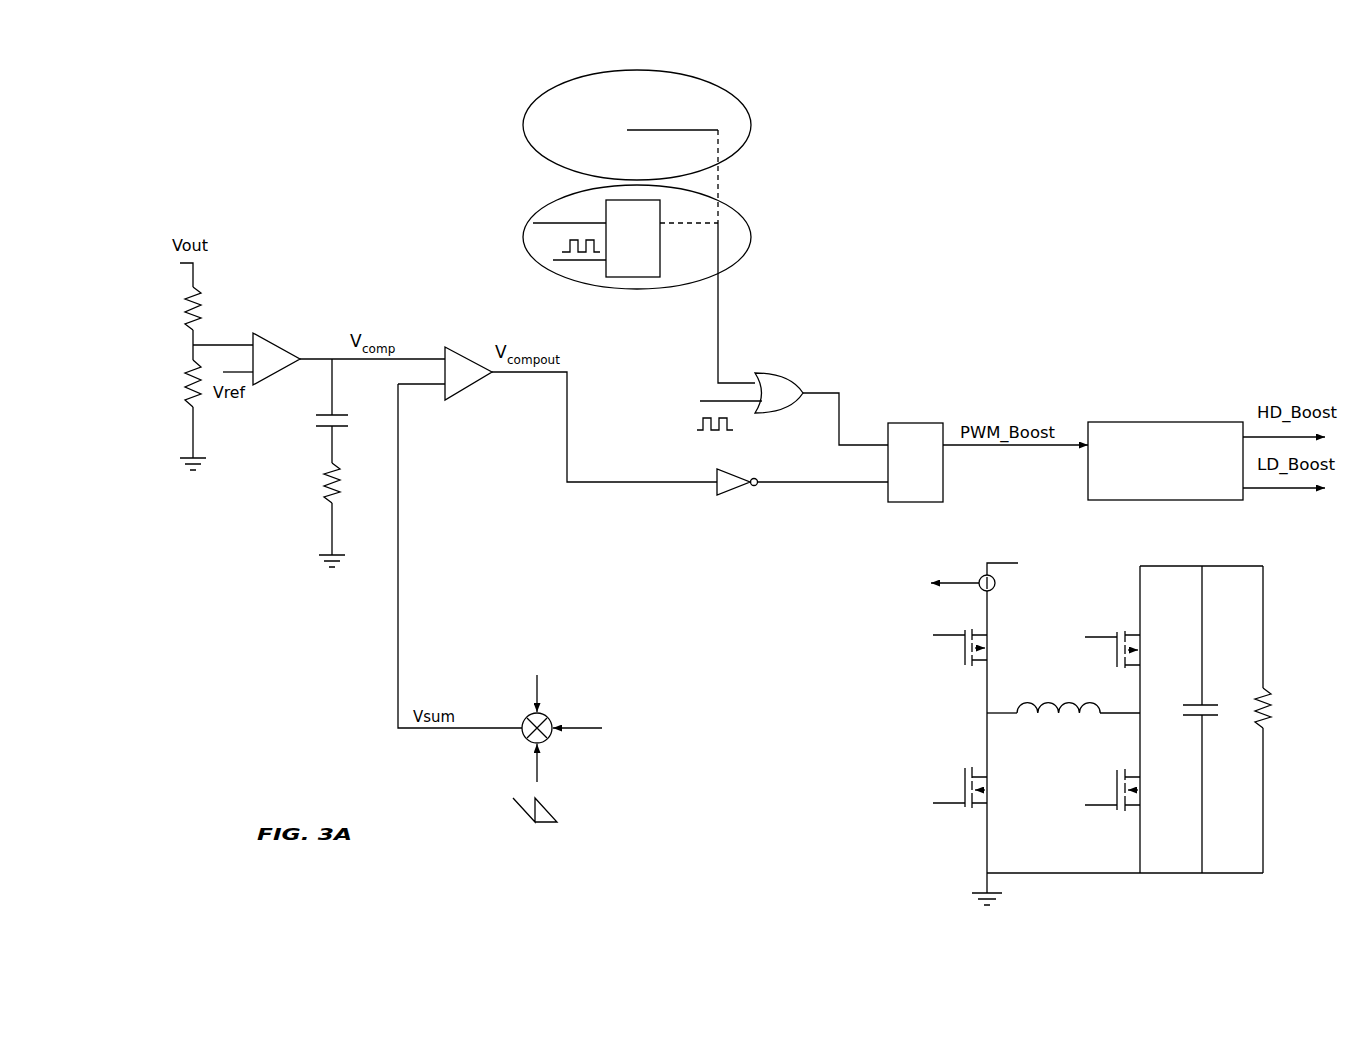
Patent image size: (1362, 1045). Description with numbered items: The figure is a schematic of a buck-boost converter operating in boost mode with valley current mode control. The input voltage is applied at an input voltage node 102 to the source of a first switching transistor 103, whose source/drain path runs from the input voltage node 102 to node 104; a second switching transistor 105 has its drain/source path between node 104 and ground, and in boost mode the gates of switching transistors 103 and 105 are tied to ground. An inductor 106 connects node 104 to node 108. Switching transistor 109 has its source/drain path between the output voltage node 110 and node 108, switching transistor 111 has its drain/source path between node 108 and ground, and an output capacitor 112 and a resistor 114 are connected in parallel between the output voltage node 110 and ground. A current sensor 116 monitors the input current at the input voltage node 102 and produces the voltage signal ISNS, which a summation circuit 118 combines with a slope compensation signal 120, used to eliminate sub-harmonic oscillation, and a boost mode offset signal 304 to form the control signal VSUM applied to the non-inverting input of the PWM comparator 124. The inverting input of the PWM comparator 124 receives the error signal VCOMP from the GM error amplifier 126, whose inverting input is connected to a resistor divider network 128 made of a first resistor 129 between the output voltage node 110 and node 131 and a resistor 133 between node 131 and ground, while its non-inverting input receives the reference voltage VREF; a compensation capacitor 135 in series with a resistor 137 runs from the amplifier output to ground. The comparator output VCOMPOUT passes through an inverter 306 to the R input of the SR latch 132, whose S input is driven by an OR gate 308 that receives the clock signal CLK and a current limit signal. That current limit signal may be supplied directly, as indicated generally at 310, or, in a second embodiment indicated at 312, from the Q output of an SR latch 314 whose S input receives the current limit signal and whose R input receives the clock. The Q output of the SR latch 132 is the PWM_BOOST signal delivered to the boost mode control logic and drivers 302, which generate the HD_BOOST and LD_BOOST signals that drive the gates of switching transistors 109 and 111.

The input voltage node 102 is at (1018, 563).
The first switching transistor 103 is at (965, 645).
The node 104 is at (987, 713).
The second switching transistor 105 is at (966, 808).
The inductor 106 is at (1034, 705).
The node 108 is at (1140, 712).
The switching transistor 109 is at (1140, 655).
The output voltage node 110 is at (1263, 568).
The switching transistor 111 is at (1140, 790).
The output capacitor 112 is at (1212, 718).
The resistor 114 is at (1293, 707).
The current sensor 116 is at (981, 577).
The summation circuit 118 is at (547, 712).
The slope compensation signal 120 is at (537, 824).
The PWM comparator 124 is at (470, 386).
The GM error amplifier 126 is at (303, 353).
The resistor divider network 128 is at (162, 346).
The first resistor 129 is at (188, 300).
The node 131 is at (197, 344).
The SR latch 132 is at (917, 423).
The resistor 133 is at (188, 402).
The capacitor 135 is at (350, 422).
The resistor 137 is at (328, 492).
The boost mode control logic and drivers 302 is at (1115, 422).
The boost mode offset signal 304 is at (532, 667).
The inverter 306 is at (731, 494).
The OR gate 308 is at (778, 374).
The current limit signal 310 is at (751, 128).
The current limit latch circuit 312 is at (628, 261).
The SR latch 314 is at (620, 277).